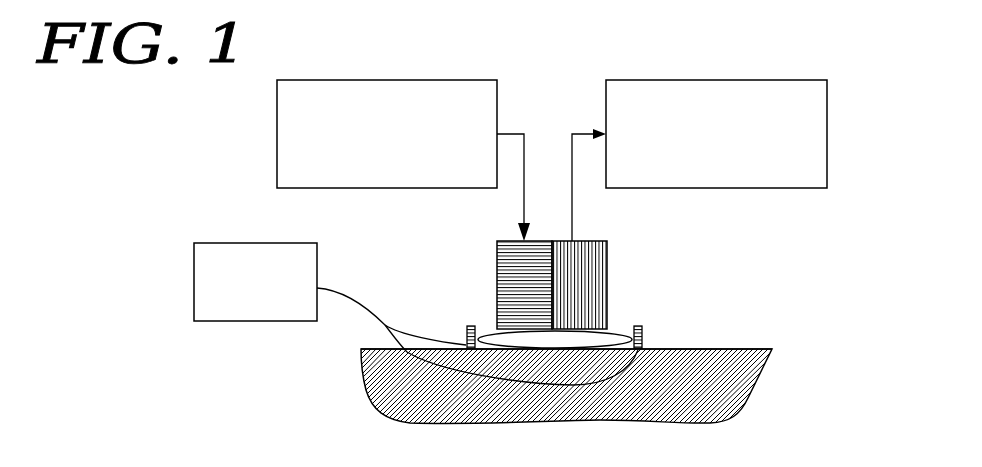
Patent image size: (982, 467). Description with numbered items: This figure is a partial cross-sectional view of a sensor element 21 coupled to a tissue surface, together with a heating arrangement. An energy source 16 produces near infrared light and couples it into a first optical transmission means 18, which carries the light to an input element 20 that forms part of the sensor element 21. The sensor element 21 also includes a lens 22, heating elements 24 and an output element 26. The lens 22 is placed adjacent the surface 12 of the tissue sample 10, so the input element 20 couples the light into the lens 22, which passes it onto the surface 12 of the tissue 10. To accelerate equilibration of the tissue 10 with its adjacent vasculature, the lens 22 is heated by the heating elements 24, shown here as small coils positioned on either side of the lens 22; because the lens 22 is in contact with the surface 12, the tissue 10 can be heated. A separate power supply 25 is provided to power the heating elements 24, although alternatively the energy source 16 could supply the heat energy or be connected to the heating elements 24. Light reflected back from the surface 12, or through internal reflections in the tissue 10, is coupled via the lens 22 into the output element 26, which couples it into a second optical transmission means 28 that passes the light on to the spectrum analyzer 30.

The tissue sample 10 is at (723, 390).
The surface 12 is at (724, 348).
The energy source 16 is at (360, 80).
The first optical transmission means 18 is at (510, 133).
The input element 20 is at (508, 262).
The sensor element 21 is at (618, 269).
The lens 22 is at (613, 333).
The heating elements 24 is at (466, 326).
The power supply 25 is at (249, 252).
The output element 26 is at (607, 243).
The second optical transmission means 28 is at (580, 133).
The spectrum analyzer 30 is at (767, 80).